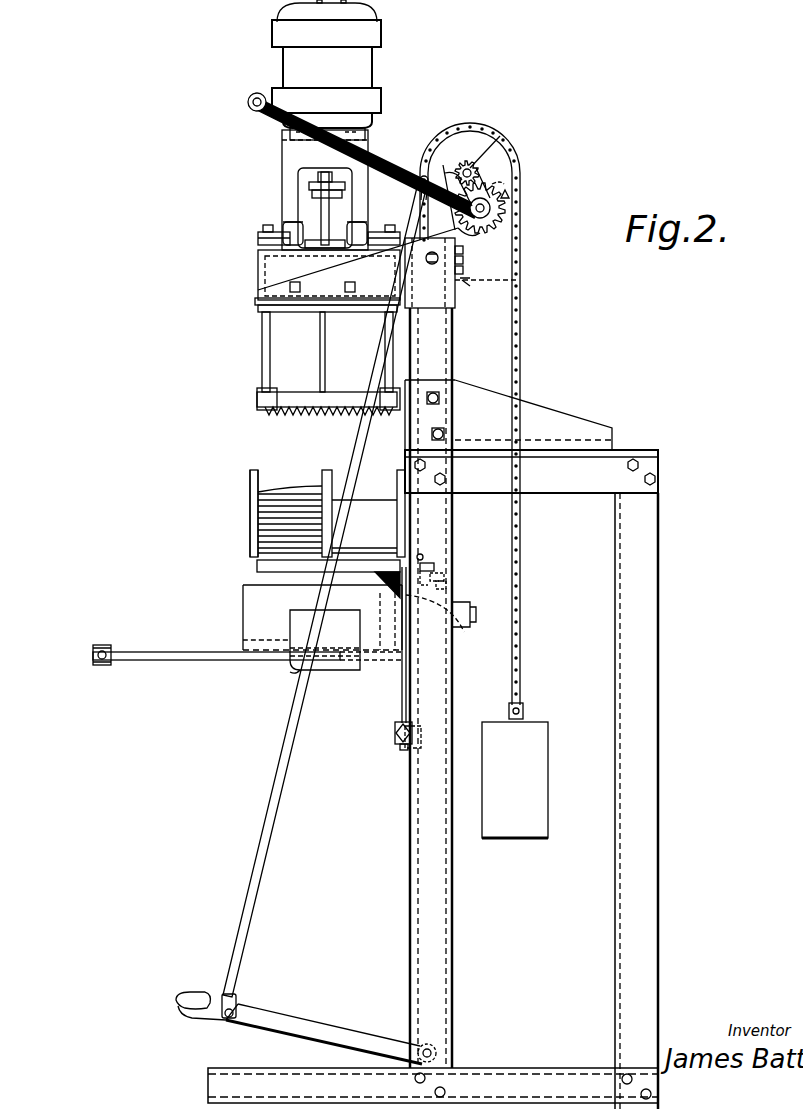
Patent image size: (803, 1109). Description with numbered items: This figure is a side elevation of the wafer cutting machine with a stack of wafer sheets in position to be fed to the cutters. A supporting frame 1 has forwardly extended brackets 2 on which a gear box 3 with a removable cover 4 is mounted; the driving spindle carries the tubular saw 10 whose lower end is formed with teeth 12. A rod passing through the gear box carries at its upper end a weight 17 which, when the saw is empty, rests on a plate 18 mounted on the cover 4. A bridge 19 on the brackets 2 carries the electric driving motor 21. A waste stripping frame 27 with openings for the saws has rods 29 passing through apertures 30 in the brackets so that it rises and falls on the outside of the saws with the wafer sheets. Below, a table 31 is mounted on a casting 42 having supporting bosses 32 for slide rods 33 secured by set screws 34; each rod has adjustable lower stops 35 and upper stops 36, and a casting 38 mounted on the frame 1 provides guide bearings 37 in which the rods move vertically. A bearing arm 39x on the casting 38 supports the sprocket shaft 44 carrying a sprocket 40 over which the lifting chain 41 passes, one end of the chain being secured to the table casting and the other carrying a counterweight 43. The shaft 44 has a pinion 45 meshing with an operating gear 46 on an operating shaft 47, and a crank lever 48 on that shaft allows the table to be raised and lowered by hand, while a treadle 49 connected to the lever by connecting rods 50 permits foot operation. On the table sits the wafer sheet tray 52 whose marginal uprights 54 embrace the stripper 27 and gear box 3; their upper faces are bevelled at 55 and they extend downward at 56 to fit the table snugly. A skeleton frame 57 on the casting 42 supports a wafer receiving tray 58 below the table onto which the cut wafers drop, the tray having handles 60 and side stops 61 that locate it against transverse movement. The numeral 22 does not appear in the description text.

The supporting frame 1 is at (440, 362).
The brackets 2 is at (445, 300).
The gear box 3 is at (262, 275).
The removable cover 4 is at (258, 256).
The tubular saw 10 is at (323, 332).
The teeth 12 is at (362, 414).
The weight 17 is at (282, 228).
The plate 18 is at (259, 239).
The bridge 19 is at (283, 160).
The driving motor 21 is at (372, 38).
The spindle 22 is at (318, 208).
The waste stripping frame 27 is at (270, 418).
The rods 29 is at (262, 370).
The apertures 30 is at (258, 307).
The table 31 is at (290, 567).
The supporting bosses 32 is at (448, 624).
The slide rods 33 is at (403, 700).
The set screws 34 is at (448, 578).
The lower stops 35 is at (395, 745).
The upper stops 36 is at (420, 174).
The guide bearings 37 is at (453, 160).
The casting 38 is at (520, 281).
The bearing arm 39x is at (450, 230).
The sprocket 40 is at (500, 136).
The lifting chain 41 is at (521, 374).
The casting 42 is at (392, 577).
The counterweight 43 is at (528, 830).
The sprocket shaft 44 is at (482, 162).
The pinion 45 is at (500, 176).
The operating gear 46 is at (509, 195).
The operating shaft 47 is at (490, 208).
The crank lever 48 is at (257, 112).
The treadle 49 is at (338, 1038).
The connecting rods 50 is at (260, 860).
The wafer sheet tray 52 is at (272, 547).
The uprights 54 is at (258, 492).
The bevelled faces 55 is at (263, 473).
The downward extensions 56 is at (258, 556).
The skeleton frame 57 is at (200, 661).
The wafer receiving tray 58 is at (270, 640).
The handles 60 is at (298, 618).
The side stops 61 is at (300, 672).